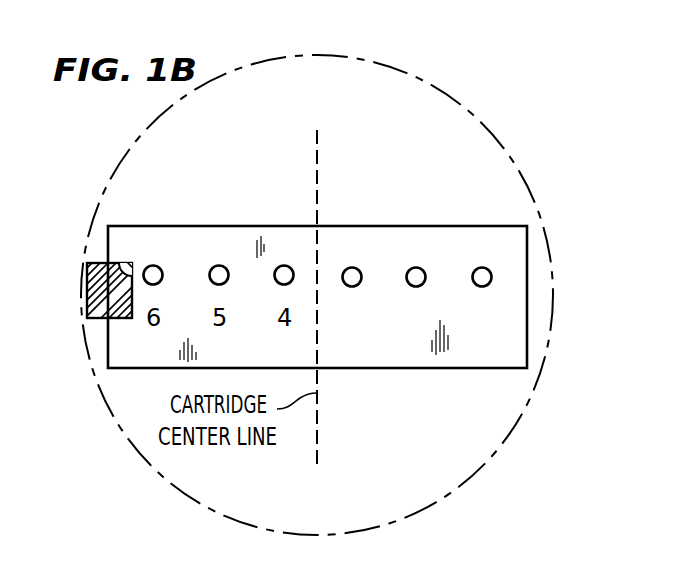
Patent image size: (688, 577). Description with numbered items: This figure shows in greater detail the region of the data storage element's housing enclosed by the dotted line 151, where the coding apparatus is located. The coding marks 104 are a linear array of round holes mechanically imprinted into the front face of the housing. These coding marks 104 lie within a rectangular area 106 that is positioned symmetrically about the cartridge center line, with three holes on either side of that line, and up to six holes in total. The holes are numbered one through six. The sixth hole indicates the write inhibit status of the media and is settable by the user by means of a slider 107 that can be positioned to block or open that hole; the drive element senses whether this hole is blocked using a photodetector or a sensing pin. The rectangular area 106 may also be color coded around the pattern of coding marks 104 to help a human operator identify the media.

The dotted line 151 is at (503, 154).
The rectangular area 106 is at (397, 353).
The slider 107 is at (87, 300).
The coding marks 104 is at (482, 267).